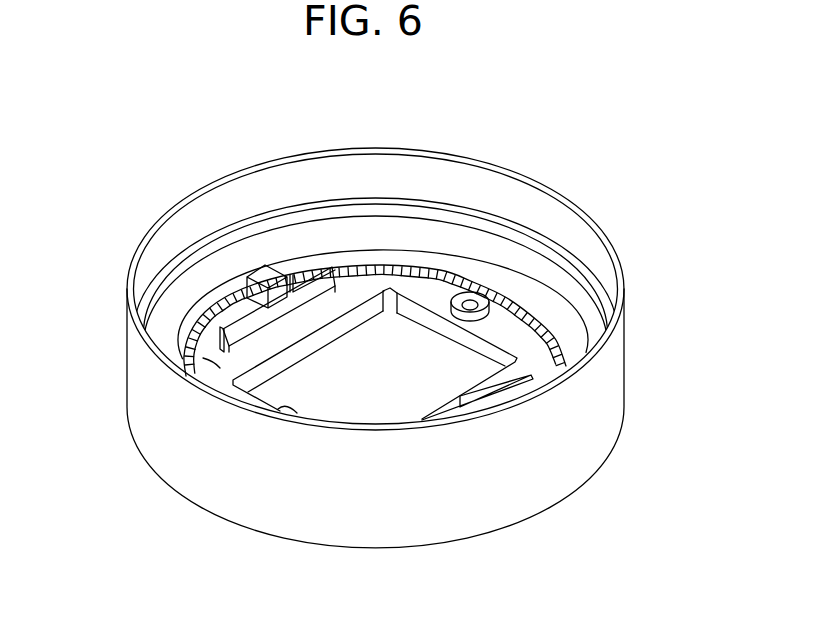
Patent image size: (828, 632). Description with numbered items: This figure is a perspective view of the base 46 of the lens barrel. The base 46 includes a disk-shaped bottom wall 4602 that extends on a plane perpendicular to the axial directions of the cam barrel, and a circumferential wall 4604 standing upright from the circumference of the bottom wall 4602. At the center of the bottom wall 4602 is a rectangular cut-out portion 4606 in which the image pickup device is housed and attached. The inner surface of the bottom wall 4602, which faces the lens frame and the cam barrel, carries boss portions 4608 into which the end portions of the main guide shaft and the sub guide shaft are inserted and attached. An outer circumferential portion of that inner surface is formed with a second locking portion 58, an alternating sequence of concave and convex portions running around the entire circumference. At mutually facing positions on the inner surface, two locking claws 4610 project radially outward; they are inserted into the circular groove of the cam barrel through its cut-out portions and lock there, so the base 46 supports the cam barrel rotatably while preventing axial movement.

The base 46 is at (468, 130).
The second locking portion 58 is at (415, 265).
The bottom wall 4602 is at (188, 358).
The circumferential wall 4604 is at (243, 477).
The cut-out portion 4606 is at (490, 358).
The boss portion 4608 is at (460, 293).
The locking claw 4610 is at (258, 268).